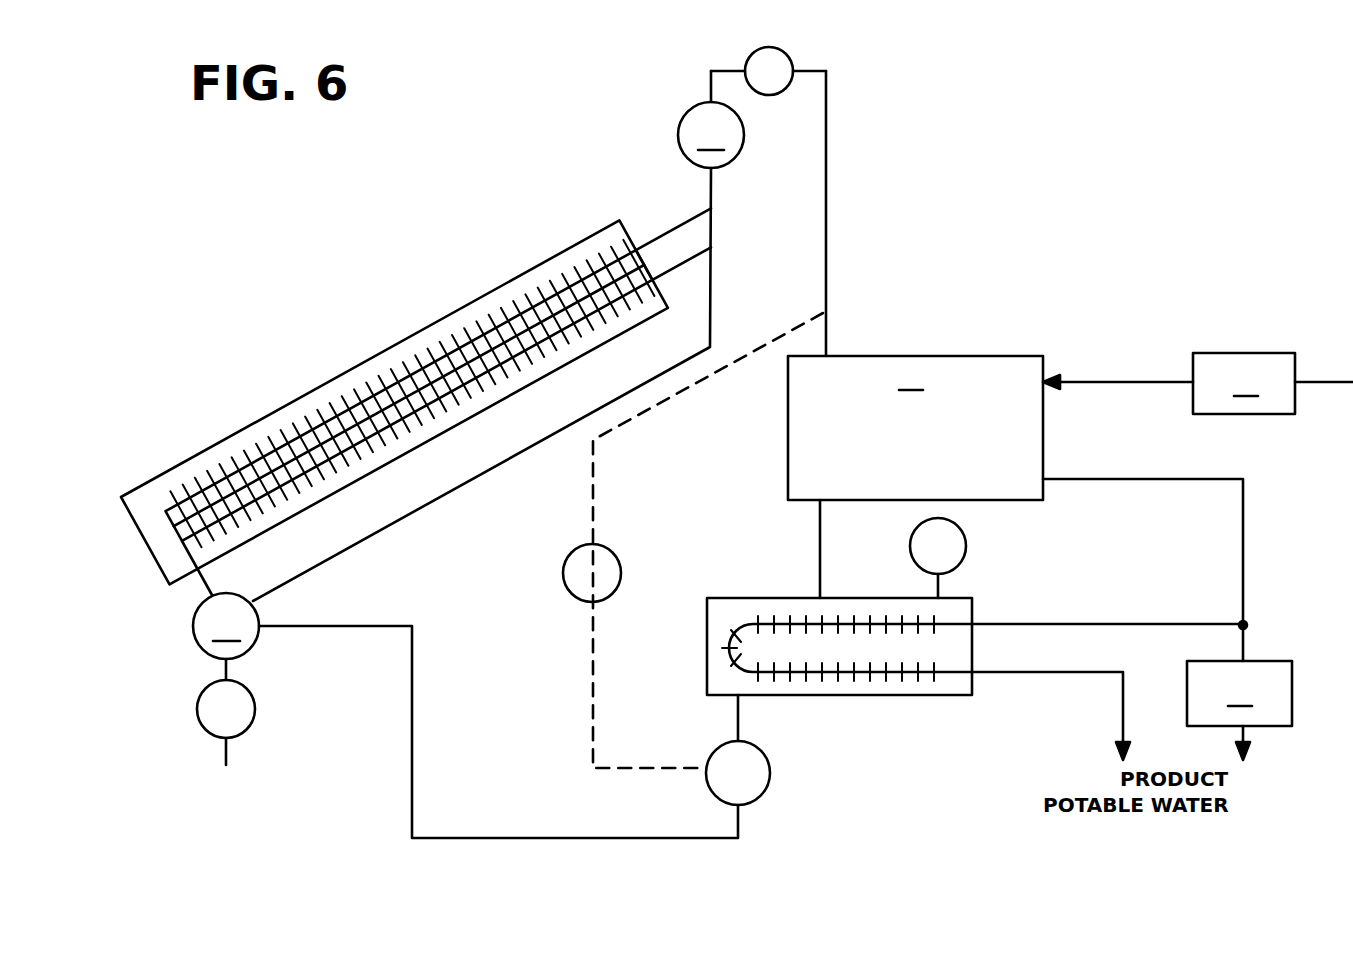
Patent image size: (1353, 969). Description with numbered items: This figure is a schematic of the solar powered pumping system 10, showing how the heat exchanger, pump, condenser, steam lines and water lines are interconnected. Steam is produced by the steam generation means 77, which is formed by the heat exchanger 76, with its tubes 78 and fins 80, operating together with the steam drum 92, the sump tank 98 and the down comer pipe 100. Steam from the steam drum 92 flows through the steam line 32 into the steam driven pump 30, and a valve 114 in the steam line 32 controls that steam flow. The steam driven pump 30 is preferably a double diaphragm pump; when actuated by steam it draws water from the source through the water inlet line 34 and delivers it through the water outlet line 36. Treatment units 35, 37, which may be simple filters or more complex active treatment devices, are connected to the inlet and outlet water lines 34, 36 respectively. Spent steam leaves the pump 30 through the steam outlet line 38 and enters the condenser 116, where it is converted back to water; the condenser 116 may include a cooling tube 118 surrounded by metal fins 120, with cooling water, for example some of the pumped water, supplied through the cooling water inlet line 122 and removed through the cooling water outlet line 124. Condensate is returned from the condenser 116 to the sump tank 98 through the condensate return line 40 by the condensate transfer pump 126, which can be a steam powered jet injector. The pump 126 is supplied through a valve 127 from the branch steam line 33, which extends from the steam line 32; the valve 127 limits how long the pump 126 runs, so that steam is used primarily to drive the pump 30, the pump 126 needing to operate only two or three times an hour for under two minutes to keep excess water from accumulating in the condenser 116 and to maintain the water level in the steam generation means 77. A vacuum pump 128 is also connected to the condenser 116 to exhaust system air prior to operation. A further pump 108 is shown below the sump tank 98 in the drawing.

The desalination system 10 is at (1116, 191).
The steam driven pump 30 is at (915, 428).
The steam line 32 is at (826, 238).
The branch steam line 33 is at (668, 403).
The water inlet line 34 is at (1118, 380).
The treatment unit 35 is at (1273, 383).
The water outlet line 36 is at (1124, 478).
The treatment unit 37 is at (1239, 710).
The steam outlet line 38 is at (820, 548).
The condensate return line 40 is at (412, 748).
The heat exchanger 76 is at (485, 268).
The steam generation means 77 is at (907, 123).
The tubes 78 is at (670, 215).
The fins 80 is at (410, 332).
The steam drum 92 is at (711, 119).
The sump tank 98 is at (220, 600).
The down comer pipe 100 is at (390, 537).
The pump 108 is at (255, 704).
The valve 114 is at (793, 62).
The condenser 116 is at (836, 695).
The cooling tube 118 is at (953, 712).
The metal fins 120 is at (918, 672).
The cooling water inlet line 122 is at (1094, 625).
The cooling water outlet line 124 is at (1036, 676).
The condensate transfer pump 126 is at (766, 785).
The valve 127 is at (618, 556).
The vacuum pump 128 is at (966, 542).